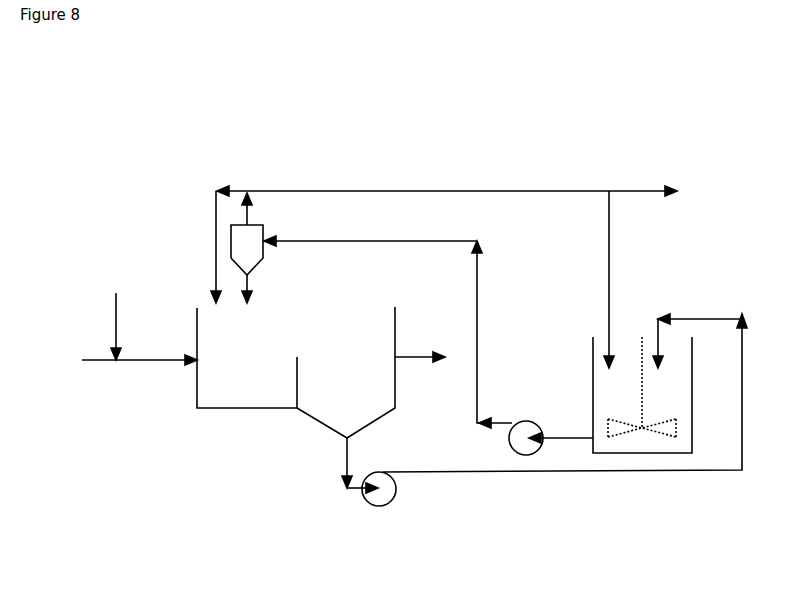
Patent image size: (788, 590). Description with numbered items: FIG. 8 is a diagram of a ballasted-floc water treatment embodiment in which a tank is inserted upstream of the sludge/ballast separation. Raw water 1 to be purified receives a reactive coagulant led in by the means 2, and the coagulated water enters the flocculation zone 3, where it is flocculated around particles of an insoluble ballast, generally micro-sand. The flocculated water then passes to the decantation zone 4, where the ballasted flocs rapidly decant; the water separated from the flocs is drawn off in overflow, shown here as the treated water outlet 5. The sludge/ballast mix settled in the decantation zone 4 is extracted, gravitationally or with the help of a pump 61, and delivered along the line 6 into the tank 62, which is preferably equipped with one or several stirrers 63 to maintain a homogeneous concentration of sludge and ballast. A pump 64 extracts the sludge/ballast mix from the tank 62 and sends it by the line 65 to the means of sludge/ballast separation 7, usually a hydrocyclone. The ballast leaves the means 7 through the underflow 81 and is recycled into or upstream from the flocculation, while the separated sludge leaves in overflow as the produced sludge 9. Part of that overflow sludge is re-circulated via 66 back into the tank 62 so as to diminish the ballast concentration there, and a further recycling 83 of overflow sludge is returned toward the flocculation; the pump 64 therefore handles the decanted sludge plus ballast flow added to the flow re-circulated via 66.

The raw water intake 1 is at (123, 383).
The reactive coagulant means 2 is at (85, 318).
The flocculation zone 3 is at (247, 358).
The decantation zone 4 is at (346, 372).
The product outlet 5 is at (427, 334).
The recycle line 6 is at (565, 418).
The means of sludge/ballast separation 7 is at (231, 243).
The produced sludge 9 is at (447, 167).
The raising means 61 is at (355, 488).
The tank 62 is at (627, 453).
The stirrer 63 is at (676, 437).
The pump 64 is at (551, 413).
The cyclone feed line 65 is at (403, 332).
The re-circulated sludge line 66 is at (640, 279).
The underflow 81 is at (277, 290).
The sludge recycling 83 is at (185, 247).